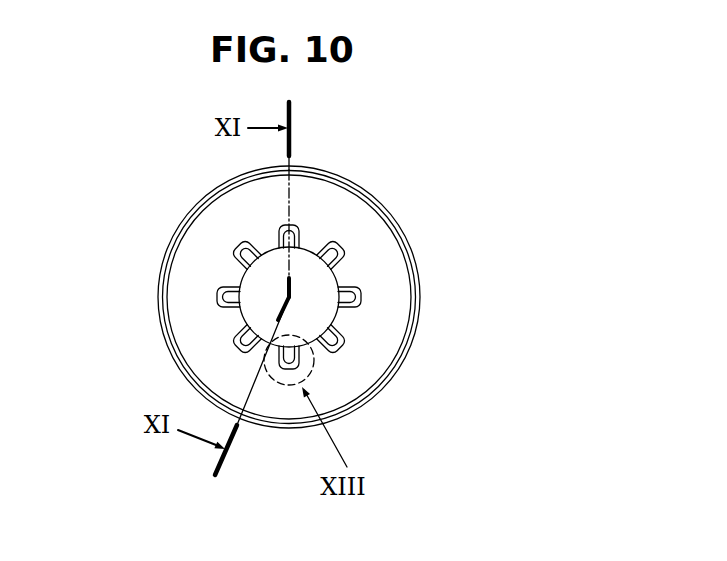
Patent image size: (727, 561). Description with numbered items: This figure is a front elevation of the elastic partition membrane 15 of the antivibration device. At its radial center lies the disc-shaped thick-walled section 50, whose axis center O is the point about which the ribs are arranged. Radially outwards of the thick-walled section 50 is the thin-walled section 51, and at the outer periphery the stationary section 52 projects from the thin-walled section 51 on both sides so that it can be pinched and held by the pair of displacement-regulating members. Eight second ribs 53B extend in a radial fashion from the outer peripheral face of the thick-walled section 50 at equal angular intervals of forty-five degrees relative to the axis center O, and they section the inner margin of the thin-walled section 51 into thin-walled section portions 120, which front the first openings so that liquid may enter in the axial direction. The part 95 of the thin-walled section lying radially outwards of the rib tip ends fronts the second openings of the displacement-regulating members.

The elastic partition membrane 15 is at (396, 214).
The thick-walled section 50 is at (314, 285).
The thin-walled section 51 is at (392, 307).
The stationary section 52 is at (403, 360).
The second ribs 53B is at (235, 247).
The part of the thin-walled section 95 is at (222, 348).
The thin-walled section portions 120 is at (310, 247).
The axis center O is at (292, 297).